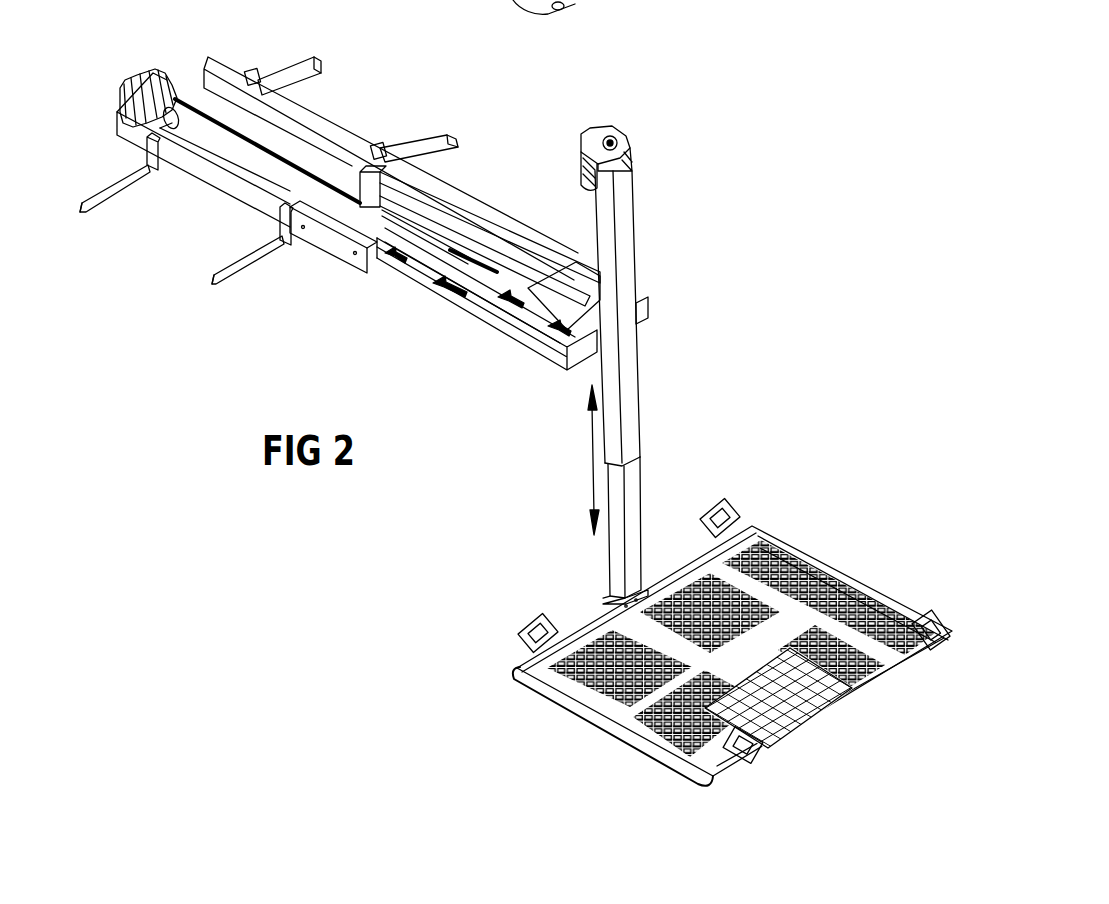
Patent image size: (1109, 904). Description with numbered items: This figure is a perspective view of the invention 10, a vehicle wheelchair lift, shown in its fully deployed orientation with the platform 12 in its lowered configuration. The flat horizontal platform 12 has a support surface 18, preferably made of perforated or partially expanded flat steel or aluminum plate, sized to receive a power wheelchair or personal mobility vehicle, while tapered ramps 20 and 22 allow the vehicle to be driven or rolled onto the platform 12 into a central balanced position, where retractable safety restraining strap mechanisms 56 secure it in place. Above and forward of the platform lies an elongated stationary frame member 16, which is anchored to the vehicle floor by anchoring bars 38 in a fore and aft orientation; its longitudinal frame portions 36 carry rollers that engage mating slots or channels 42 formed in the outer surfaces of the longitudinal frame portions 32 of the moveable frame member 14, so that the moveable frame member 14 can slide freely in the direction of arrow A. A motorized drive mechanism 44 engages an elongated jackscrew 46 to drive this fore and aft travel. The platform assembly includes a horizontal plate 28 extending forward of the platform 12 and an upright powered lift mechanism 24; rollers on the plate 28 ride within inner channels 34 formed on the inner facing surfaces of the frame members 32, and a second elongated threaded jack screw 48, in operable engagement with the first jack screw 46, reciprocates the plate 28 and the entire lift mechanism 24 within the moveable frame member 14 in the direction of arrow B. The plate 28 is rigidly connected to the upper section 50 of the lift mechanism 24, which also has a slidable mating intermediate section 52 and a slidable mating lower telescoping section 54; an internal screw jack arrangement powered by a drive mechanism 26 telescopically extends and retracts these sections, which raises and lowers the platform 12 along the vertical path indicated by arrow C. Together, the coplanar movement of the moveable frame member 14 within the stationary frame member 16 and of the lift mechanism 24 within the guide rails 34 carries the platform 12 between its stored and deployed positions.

The invention 10 is at (806, 168).
The platform 12 is at (820, 530).
The moveable frame member 14 is at (462, 326).
The stationary frame member 16 is at (336, 108).
The support surface 18 is at (835, 577).
The tapered ramp 20 is at (598, 715).
The tapered ramp 22 is at (870, 600).
The upright powered lift mechanism 24 is at (652, 372).
The drive mechanism 26 is at (614, 128).
The horizontal plate 28 is at (578, 292).
The longitudinal frame portions 32 is at (503, 227).
The inner channels 34 is at (530, 263).
The longitudinal frame portions 36 is at (214, 200).
The anchoring bars 38 is at (259, 270).
The slots or channels 42 is at (552, 322).
The motorized drive mechanism 44 is at (132, 75).
The elongated jackscrew 46 is at (322, 170).
The second elongated threaded jack screw 48 is at (455, 250).
The upper section 50 is at (641, 205).
The intermediate section 52 is at (641, 356).
The lower telescoping section 54 is at (641, 500).
The retractable safety restraining strap mechanisms 56 is at (737, 514).
The arrow A is at (430, 282).
The arrow B is at (550, 332).
The vertical travel direction arrow C is at (591, 447).